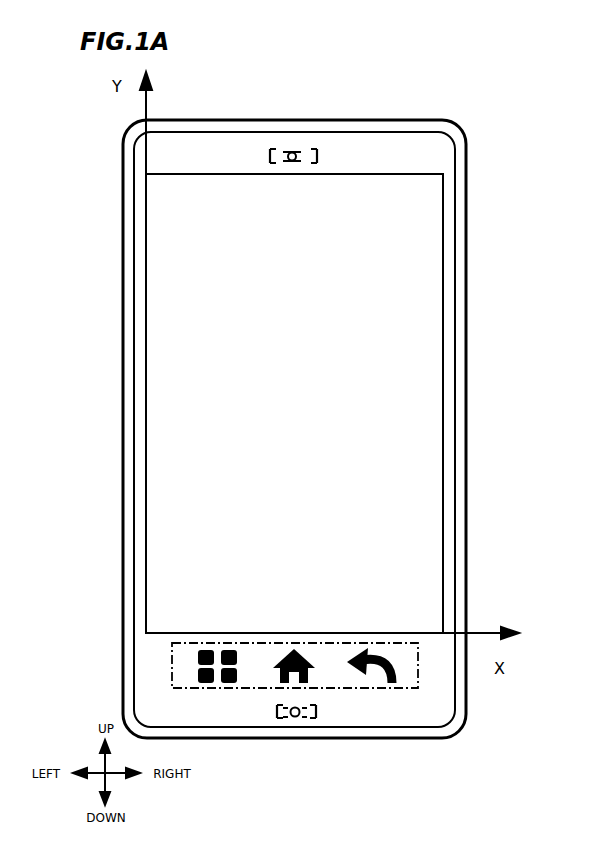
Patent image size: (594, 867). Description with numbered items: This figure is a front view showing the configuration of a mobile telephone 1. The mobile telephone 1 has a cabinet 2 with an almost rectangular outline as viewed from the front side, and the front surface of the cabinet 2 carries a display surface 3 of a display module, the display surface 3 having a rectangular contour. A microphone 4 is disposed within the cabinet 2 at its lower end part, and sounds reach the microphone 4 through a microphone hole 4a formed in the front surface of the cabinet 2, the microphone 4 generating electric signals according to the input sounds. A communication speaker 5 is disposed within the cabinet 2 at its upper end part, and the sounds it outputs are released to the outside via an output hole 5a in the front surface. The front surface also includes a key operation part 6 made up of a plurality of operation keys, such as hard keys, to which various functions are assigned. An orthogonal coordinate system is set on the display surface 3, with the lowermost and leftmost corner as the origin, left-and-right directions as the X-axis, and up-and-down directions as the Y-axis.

The mobile telephone 1 is at (470, 122).
The cabinet 2 is at (468, 218).
The display surface 3 is at (182, 270).
The microphone 4 is at (281, 762).
The microphone hole 4a is at (298, 718).
The communication speaker 5 is at (304, 95).
The output hole 5a is at (290, 150).
The key operation part 6 is at (363, 687).